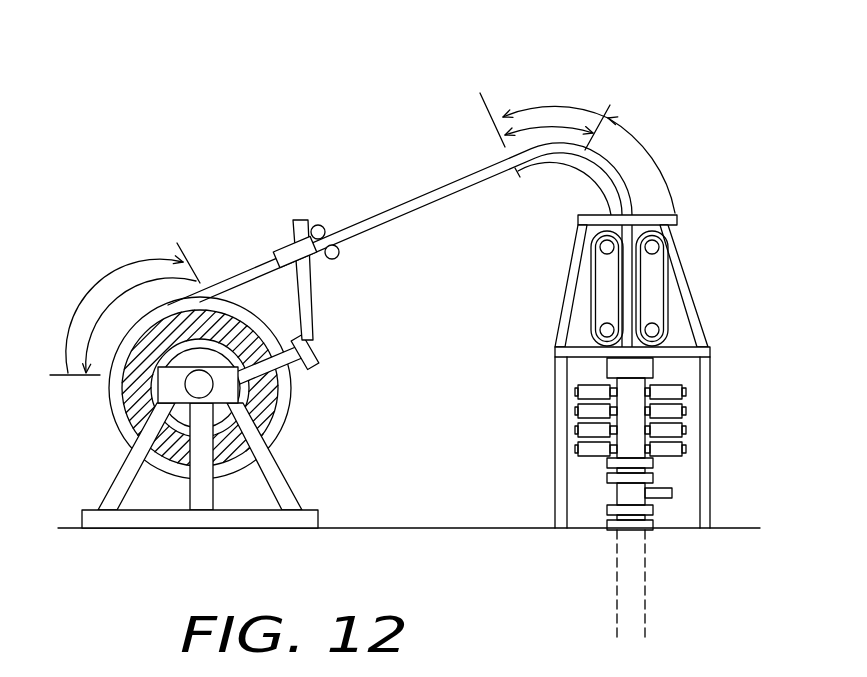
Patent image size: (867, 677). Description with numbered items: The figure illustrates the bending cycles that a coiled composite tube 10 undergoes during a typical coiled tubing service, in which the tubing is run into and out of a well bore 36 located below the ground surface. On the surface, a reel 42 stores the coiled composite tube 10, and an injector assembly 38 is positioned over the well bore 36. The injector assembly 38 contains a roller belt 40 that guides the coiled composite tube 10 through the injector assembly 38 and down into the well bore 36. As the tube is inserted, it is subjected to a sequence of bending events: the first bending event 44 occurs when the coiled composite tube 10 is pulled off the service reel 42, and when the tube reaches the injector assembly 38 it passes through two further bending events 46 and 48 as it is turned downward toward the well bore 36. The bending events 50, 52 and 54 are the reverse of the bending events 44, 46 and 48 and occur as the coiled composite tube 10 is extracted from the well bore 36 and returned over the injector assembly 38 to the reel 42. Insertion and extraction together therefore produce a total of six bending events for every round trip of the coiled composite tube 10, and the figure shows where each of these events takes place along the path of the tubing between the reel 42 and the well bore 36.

The coiled composite tube 10 is at (437, 189).
The well bore 36 is at (617, 583).
The injector assembly 38 is at (578, 388).
The roller belt 40 is at (590, 298).
The reel 42 is at (273, 430).
The first bending event 44 is at (95, 291).
The bending event 46 is at (561, 115).
The bending event 48 is at (650, 212).
The bending event 50 is at (652, 158).
The bending event 52 is at (538, 107).
The bending event 54 is at (108, 318).